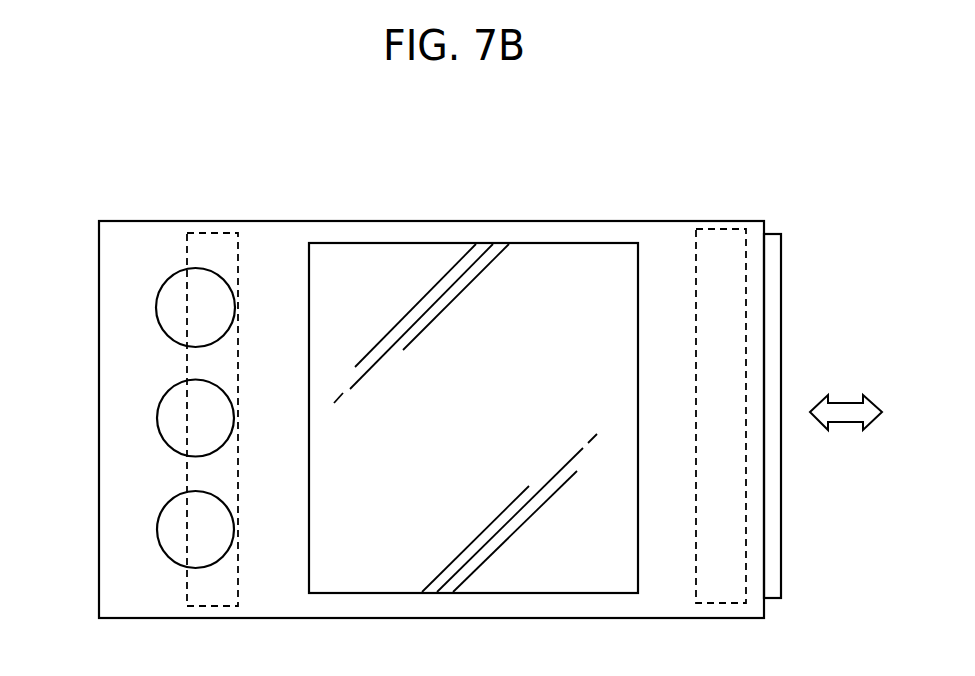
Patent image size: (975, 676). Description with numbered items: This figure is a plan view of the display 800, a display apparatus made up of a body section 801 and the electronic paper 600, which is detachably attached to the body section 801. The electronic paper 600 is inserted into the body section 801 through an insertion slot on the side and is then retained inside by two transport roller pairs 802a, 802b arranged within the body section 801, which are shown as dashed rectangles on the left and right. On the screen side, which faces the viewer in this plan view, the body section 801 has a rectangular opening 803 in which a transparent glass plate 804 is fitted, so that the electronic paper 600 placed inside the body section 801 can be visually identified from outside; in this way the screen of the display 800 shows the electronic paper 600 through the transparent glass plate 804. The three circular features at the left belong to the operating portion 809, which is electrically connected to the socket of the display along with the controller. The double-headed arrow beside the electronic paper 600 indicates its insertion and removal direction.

The display 800 is at (624, 125).
The body section 801 is at (290, 232).
The transport roller pair 802a is at (214, 233).
The transport roller pair 802b is at (726, 229).
The rectangular opening 803 is at (376, 252).
The transparent glass plate 804 is at (562, 257).
The operating portion 809 is at (162, 262).
The electronic paper 600 is at (776, 285).